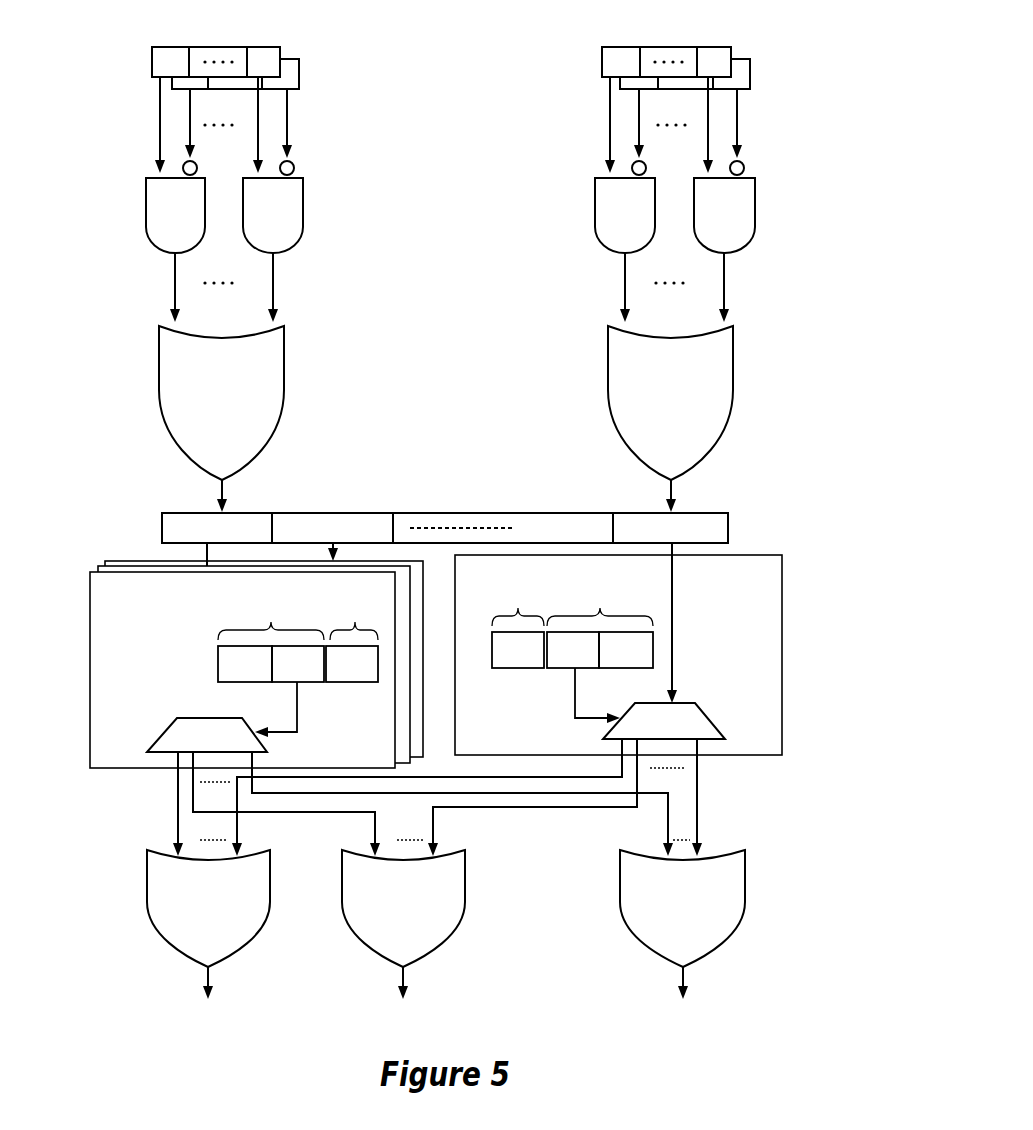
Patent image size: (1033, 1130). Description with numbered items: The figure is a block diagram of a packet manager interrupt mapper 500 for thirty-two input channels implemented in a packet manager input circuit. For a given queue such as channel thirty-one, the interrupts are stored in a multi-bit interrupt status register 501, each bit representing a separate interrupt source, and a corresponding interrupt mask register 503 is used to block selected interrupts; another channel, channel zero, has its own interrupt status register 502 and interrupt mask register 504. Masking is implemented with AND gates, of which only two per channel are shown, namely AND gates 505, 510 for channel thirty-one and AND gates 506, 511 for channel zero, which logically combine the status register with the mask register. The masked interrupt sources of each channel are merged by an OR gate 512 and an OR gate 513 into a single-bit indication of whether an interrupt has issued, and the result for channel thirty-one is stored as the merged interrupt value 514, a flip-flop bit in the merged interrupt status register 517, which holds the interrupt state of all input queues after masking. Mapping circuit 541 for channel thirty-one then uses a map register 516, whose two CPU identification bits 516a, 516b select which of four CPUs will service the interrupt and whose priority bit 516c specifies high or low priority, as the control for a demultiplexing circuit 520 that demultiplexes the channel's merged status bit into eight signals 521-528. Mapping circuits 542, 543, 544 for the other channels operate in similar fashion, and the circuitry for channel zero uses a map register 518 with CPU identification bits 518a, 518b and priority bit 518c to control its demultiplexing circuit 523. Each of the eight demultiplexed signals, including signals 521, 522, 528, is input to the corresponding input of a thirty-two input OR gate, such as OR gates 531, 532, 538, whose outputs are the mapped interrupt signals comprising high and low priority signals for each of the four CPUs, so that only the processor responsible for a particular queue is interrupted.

The packet manager interrupt mapper 500 is at (457, 520).
The interrupt status register 501 is at (150, 59).
The interrupt status register 502 is at (601, 60).
The interrupt mask register 503 is at (300, 89).
The interrupt mask register 504 is at (778, 47).
The AND gate 505 is at (175, 250).
The AND gate 506 is at (625, 250).
The AND gate 510 is at (273, 250).
The AND gate 511 is at (724, 250).
The OR gate 512 is at (221, 419).
The OR gate 513 is at (728, 525).
The merged interrupt value 514 is at (197, 512).
The map register 516 is at (300, 667).
The CPU identification bit 516a is at (245, 664).
The CPU identification bit 516b is at (298, 664).
The priority bit 516c is at (307, 683).
The merged interrupt status register 517 is at (445, 515).
The map register 518 is at (570, 653).
The CPU identification bit 518a is at (626, 650).
The CPU identification bit 518b is at (573, 650).
The priority bit 518c is at (518, 650).
The demultiplexing circuit 520 is at (160, 733).
The demultiplexed interrupt signal 521 is at (178, 835).
The demultiplexed interrupt signal 522 is at (277, 812).
The demultiplexing circuit 523 is at (715, 725).
The demultiplexed interrupt signal 528 is at (363, 793).
The thirty-two input OR gate 531 is at (208, 936).
The thirty-two input OR gate 532 is at (403, 936).
The thirty-two input OR gate 538 is at (682, 936).
The mapping circuit 541 is at (242, 670).
The mapping circuit 542 is at (98, 568).
The mapping circuit 543 is at (105, 563).
The mapping circuit 544 is at (618, 655).